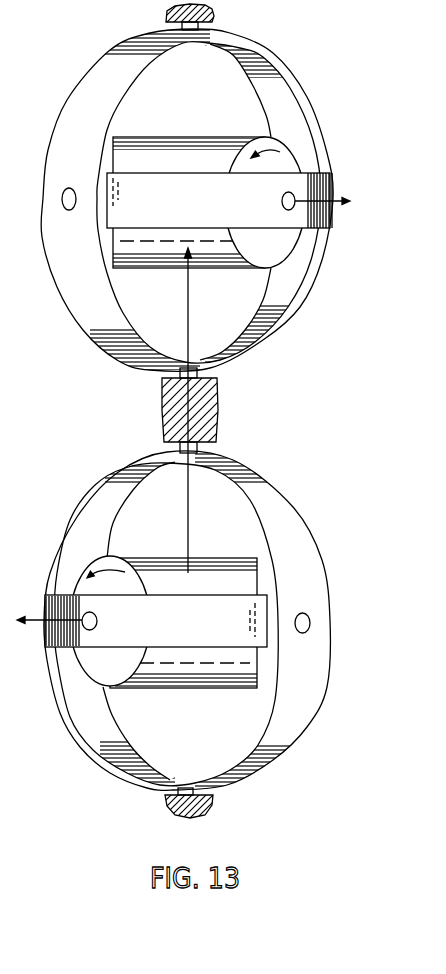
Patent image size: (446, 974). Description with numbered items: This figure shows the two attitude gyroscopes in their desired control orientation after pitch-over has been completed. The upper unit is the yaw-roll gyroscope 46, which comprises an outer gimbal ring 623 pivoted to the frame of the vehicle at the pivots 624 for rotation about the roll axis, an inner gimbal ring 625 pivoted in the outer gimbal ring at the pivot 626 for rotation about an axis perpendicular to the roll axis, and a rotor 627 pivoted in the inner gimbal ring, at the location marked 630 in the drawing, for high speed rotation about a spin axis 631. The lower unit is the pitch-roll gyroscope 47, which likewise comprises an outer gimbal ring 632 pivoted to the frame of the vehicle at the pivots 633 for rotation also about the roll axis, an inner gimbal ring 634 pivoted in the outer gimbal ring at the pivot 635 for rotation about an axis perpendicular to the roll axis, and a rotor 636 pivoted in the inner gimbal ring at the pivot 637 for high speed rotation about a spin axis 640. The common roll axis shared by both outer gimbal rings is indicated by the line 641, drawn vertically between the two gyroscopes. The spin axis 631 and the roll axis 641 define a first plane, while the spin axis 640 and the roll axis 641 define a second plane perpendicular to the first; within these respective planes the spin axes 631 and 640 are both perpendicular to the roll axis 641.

The yaw-roll gyroscope 46 is at (204, 198).
The pitch-roll gyroscope 47 is at (195, 611).
The outer gimbal ring 623 is at (274, 53).
The pivot 624 is at (199, 26).
The inner gimbal ring 625 is at (329, 195).
The pivot 626 is at (62, 201).
The rotor 627 is at (186, 136).
The aperture 630 is at (293, 208).
The spin axis 631 is at (337, 206).
The outer gimbal ring 632 is at (327, 661).
The pivot 633 is at (213, 444).
The inner gimbal ring 634 is at (45, 627).
The pivot 635 is at (310, 622).
The rotor 636 is at (245, 558).
The pivot 637 is at (88, 633).
The spin axis 640 is at (40, 618).
The roll axis line 641 is at (187, 409).